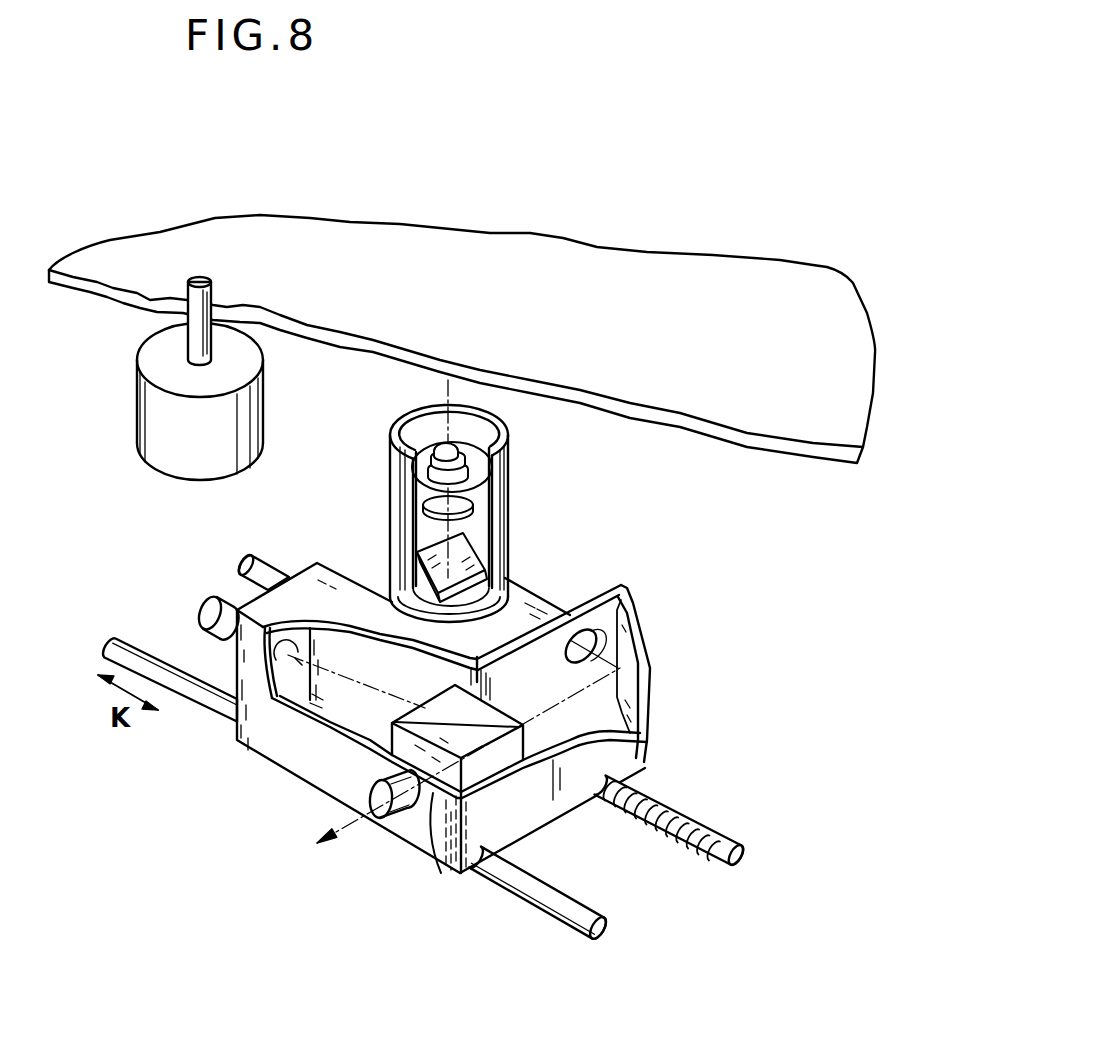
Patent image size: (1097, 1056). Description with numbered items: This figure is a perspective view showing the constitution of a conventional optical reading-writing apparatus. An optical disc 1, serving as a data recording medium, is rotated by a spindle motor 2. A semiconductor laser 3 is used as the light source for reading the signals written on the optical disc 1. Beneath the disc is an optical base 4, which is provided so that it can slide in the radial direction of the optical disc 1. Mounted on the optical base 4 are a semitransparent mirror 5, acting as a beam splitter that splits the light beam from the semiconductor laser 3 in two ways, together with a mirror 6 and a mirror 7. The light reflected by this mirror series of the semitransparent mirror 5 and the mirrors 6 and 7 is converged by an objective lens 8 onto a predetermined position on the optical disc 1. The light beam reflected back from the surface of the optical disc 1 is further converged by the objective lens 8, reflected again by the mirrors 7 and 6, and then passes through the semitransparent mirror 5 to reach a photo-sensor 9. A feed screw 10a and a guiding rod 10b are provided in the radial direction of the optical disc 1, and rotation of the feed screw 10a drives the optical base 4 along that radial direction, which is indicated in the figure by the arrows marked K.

The optical disc 1 is at (721, 268).
The spindle motor 2 is at (157, 433).
The semiconductor laser 3 is at (210, 590).
The optical base 4 is at (283, 760).
The semitransparent mirror 5 is at (452, 818).
The mirror 6 is at (630, 653).
The mirror 7 is at (413, 537).
The objective lens 8 is at (462, 500).
The photo-sensor 9 is at (388, 820).
The feed screw 10a is at (698, 822).
The guiding rod 10b is at (532, 907).